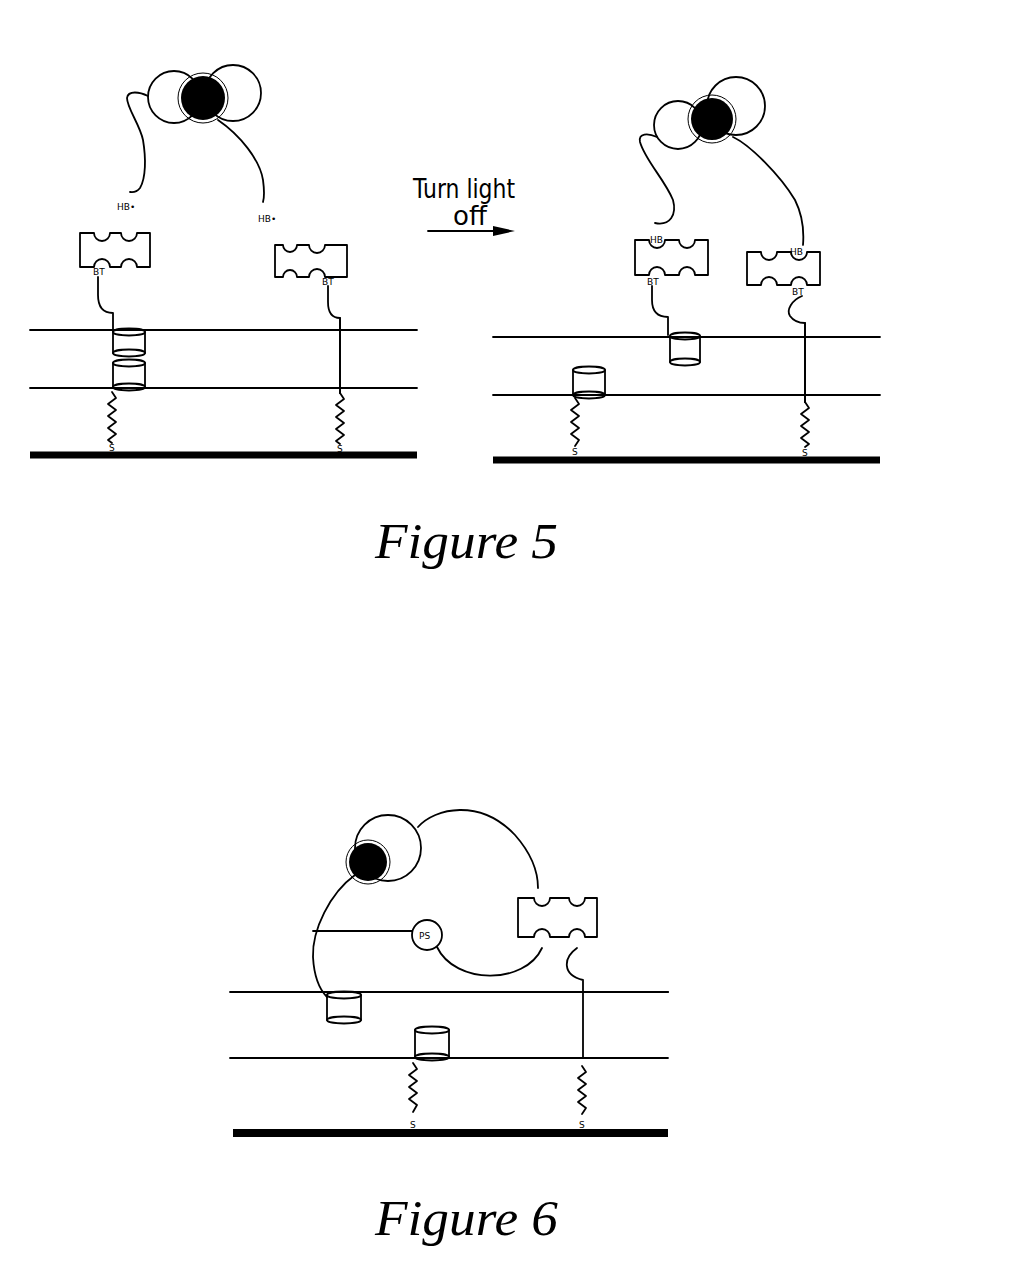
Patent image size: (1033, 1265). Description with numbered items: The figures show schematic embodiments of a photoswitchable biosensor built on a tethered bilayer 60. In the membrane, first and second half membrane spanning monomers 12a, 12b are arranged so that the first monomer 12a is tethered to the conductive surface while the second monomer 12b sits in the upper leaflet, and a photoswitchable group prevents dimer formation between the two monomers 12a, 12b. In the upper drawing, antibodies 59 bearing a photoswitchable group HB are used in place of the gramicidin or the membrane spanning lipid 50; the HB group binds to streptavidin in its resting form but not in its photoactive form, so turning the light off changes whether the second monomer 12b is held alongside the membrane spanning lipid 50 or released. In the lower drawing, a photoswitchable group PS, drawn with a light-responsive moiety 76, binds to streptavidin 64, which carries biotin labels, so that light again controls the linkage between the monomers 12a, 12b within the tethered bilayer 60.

In FIG. 5, the antibodies 59 is at (148, 85).
In FIG. 5, the second half membrane spanning monomer 12b is at (138, 348).
In FIG. 6, the second half membrane spanning monomer 12b is at (362, 1005).
In FIG. 5, the first half membrane spanning monomer 12a is at (138, 375).
In FIG. 6, the first half membrane spanning monomer 12a is at (488, 1045).
In FIG. 5, the MSL 50 is at (345, 357).
In FIG. 6, the light-responsive moiety 76 is at (352, 858).
In FIG. 6, the streptavidin 64 is at (597, 920).
In FIG. 6, the tethered bilayer 60 is at (645, 1022).